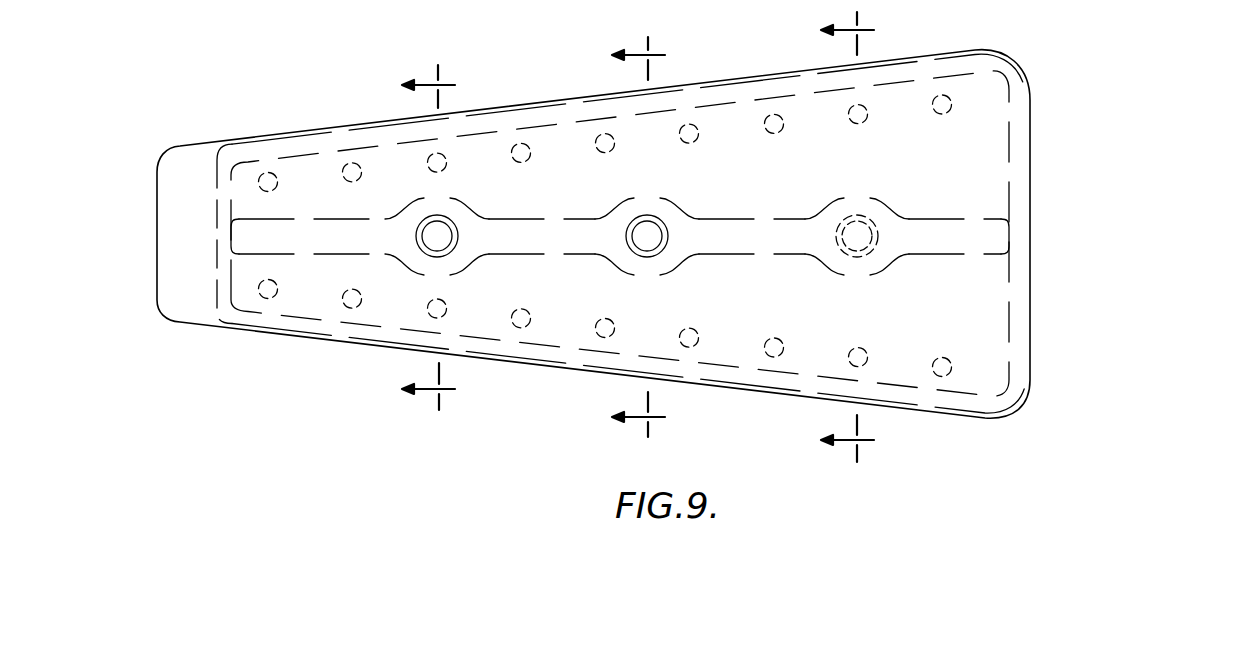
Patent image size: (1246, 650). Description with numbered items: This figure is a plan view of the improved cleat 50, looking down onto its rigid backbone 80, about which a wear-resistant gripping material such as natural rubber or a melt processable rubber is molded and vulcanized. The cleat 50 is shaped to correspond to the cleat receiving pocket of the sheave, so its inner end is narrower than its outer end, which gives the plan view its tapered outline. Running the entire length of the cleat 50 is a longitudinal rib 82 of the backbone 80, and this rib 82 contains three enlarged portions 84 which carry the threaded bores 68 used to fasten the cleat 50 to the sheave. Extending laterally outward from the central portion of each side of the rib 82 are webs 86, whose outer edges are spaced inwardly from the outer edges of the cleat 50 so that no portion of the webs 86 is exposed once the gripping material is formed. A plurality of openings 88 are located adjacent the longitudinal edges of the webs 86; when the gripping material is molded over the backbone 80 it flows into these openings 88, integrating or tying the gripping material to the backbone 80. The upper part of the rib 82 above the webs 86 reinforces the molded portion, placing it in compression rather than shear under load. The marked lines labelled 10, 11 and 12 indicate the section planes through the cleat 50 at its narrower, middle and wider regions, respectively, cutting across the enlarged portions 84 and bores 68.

The cleat 50 is at (1102, 257).
The rigid backbone 80 is at (1016, 346).
The longitudinal rib 82 is at (1002, 221).
The enlarged portions 84 is at (452, 195).
The webs 86 is at (992, 110).
The openings 88 is at (268, 173).
The threaded bores 68 is at (463, 212).
The section line 10- 10 is at (439, 239).
The section line 11- 11 is at (649, 239).
The section line 12- 12 is at (858, 238).